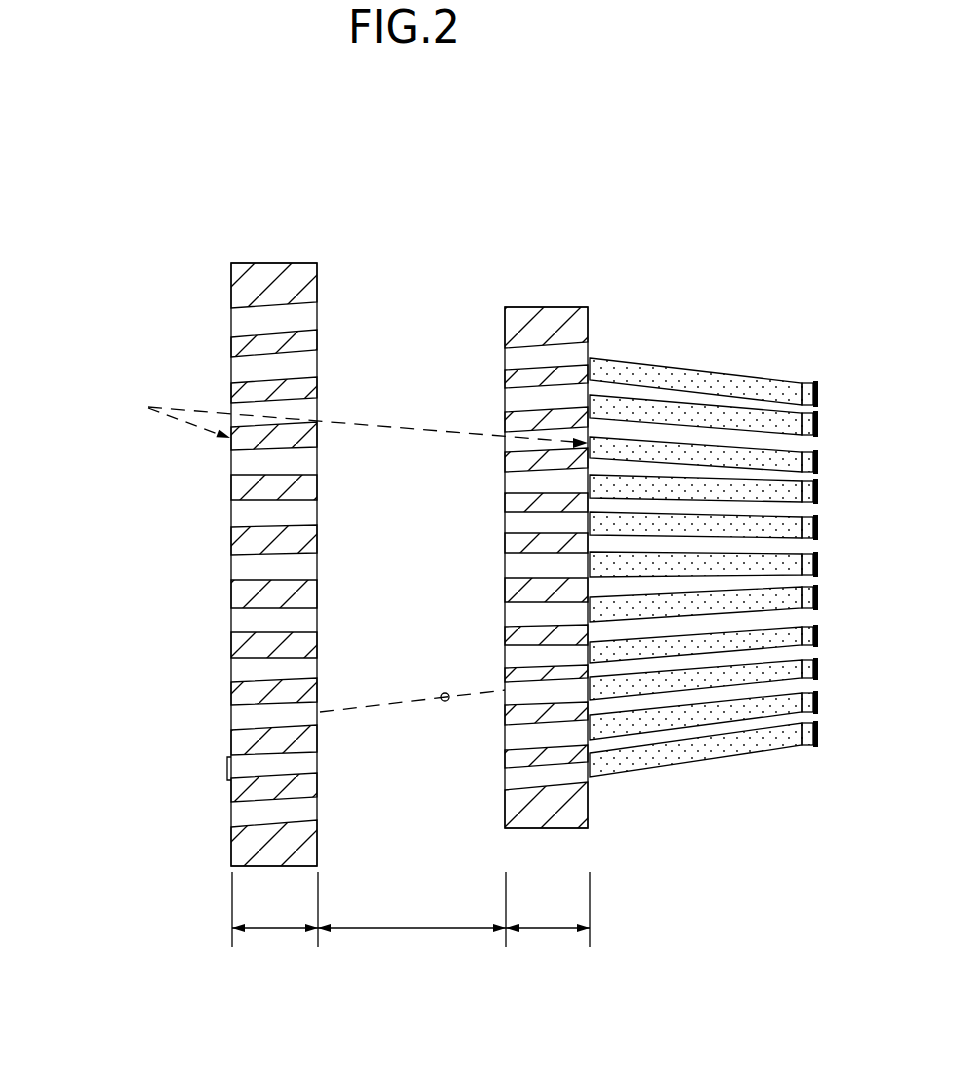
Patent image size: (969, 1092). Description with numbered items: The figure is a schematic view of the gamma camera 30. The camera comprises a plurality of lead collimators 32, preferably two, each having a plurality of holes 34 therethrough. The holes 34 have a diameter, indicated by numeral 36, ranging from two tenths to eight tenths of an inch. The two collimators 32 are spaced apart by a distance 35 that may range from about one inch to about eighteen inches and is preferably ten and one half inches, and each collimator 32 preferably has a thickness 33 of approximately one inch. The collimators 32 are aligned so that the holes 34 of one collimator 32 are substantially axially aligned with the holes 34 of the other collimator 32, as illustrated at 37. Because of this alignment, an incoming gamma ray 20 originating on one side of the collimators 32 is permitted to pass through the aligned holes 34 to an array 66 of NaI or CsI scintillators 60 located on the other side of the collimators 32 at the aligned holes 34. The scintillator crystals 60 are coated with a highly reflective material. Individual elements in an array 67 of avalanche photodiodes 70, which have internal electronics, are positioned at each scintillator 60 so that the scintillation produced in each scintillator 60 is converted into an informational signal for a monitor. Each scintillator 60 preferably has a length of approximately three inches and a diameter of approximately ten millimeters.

The incoming gamma ray 20 is at (190, 408).
The gamma camera 30 is at (437, 228).
The lead collimator 32 is at (245, 287).
The thickness 33 is at (275, 932).
The holes 34 is at (220, 672).
The distance 35 is at (410, 932).
The diameter 36 is at (330, 498).
The axial alignment 37 is at (443, 702).
The scintillator 60 is at (710, 365).
The array of scintillators 66 is at (710, 775).
The array of avalanche photodiodes 67 is at (843, 455).
The avalanche photodiode 70 is at (811, 758).